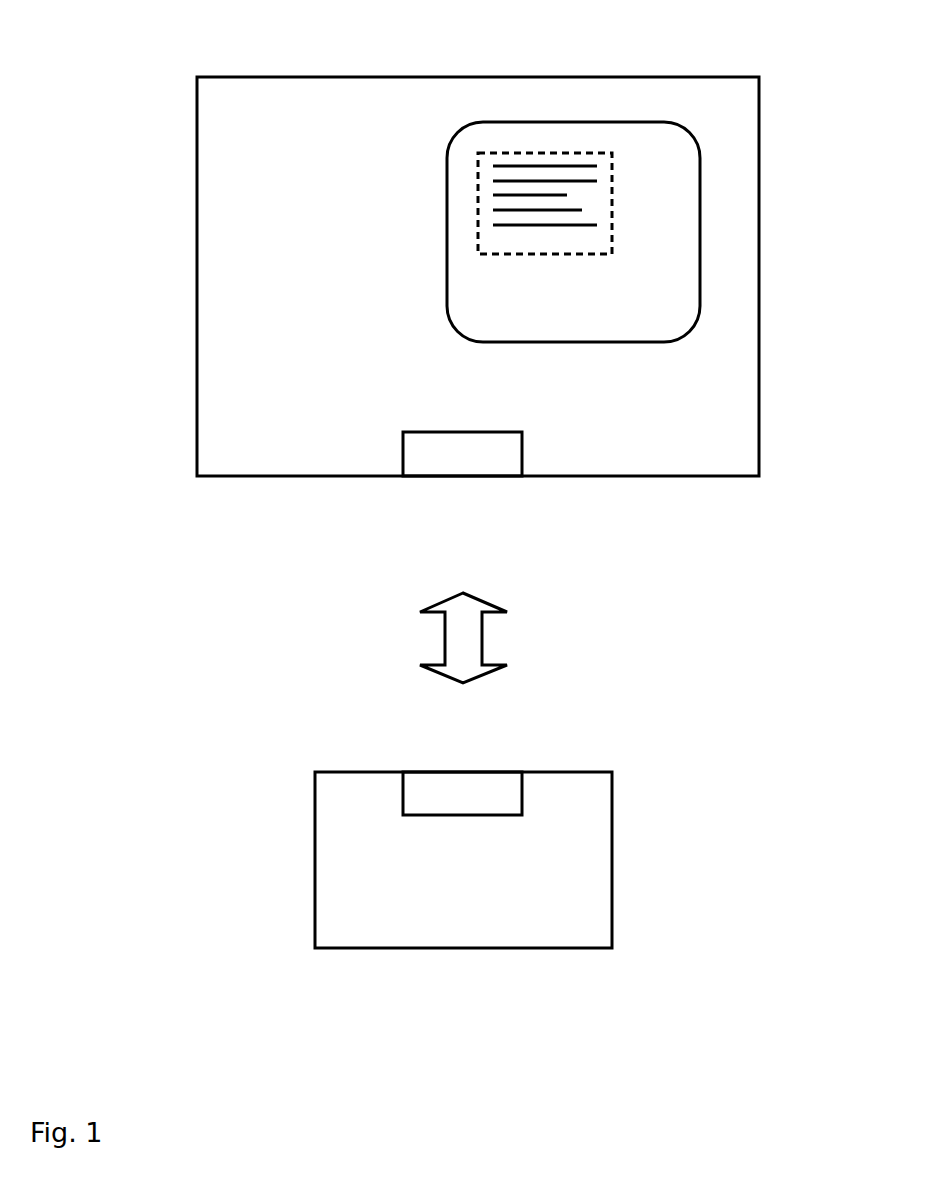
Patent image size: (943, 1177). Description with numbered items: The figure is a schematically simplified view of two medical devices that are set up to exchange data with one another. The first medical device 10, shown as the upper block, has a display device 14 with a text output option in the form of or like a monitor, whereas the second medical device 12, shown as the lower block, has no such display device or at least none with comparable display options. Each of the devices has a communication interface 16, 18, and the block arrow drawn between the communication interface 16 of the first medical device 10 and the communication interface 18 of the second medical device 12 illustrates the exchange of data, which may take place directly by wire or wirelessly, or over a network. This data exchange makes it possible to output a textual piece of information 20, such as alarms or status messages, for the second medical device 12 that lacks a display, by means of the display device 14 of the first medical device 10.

The first medical device 10 is at (150, 248).
The second medical device 12 is at (258, 795).
The display device 14 is at (700, 210).
The communication interface 16 is at (522, 462).
The communication interface 18 is at (402, 786).
The textual piece of information 20 is at (517, 152).